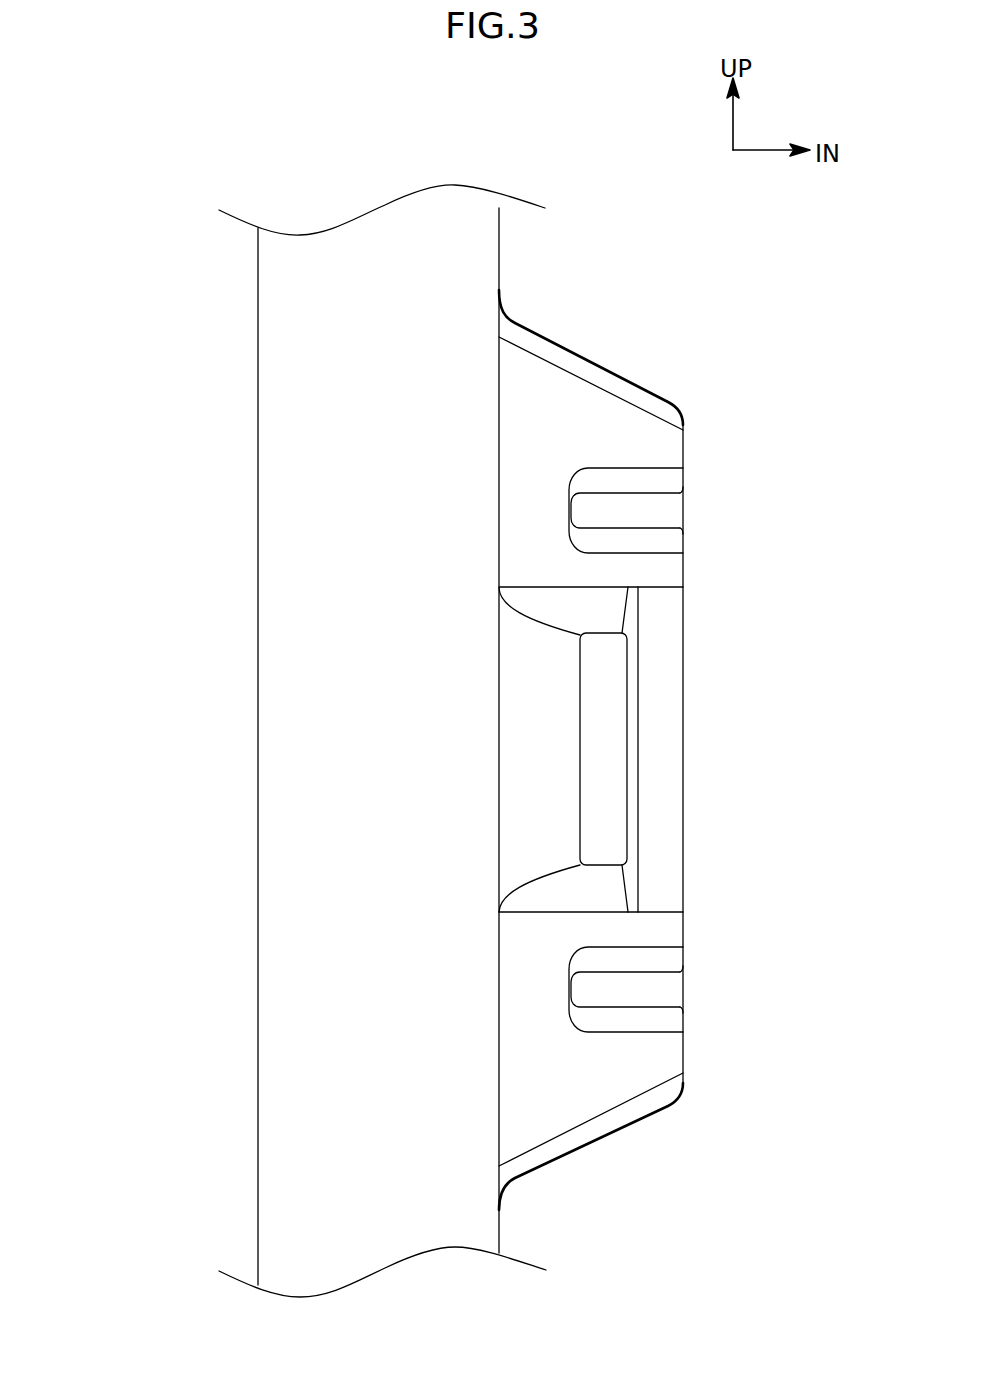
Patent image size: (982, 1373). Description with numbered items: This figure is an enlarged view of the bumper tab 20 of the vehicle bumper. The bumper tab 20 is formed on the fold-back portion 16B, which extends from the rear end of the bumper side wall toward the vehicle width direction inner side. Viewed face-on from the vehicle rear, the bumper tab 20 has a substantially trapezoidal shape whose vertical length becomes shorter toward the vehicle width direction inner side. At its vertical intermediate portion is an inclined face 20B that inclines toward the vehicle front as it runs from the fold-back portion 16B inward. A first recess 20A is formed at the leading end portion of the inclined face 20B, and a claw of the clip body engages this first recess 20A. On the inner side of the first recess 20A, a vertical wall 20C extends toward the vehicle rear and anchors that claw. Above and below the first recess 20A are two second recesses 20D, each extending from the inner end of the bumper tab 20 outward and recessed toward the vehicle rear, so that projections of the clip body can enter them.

The fold-back portion 16B is at (272, 536).
The bumper tab 20 is at (608, 366).
The first recess 20A is at (615, 716).
The inclined face 20B is at (506, 702).
The vertical wall 20C is at (640, 660).
The second recesses 20D is at (652, 510).